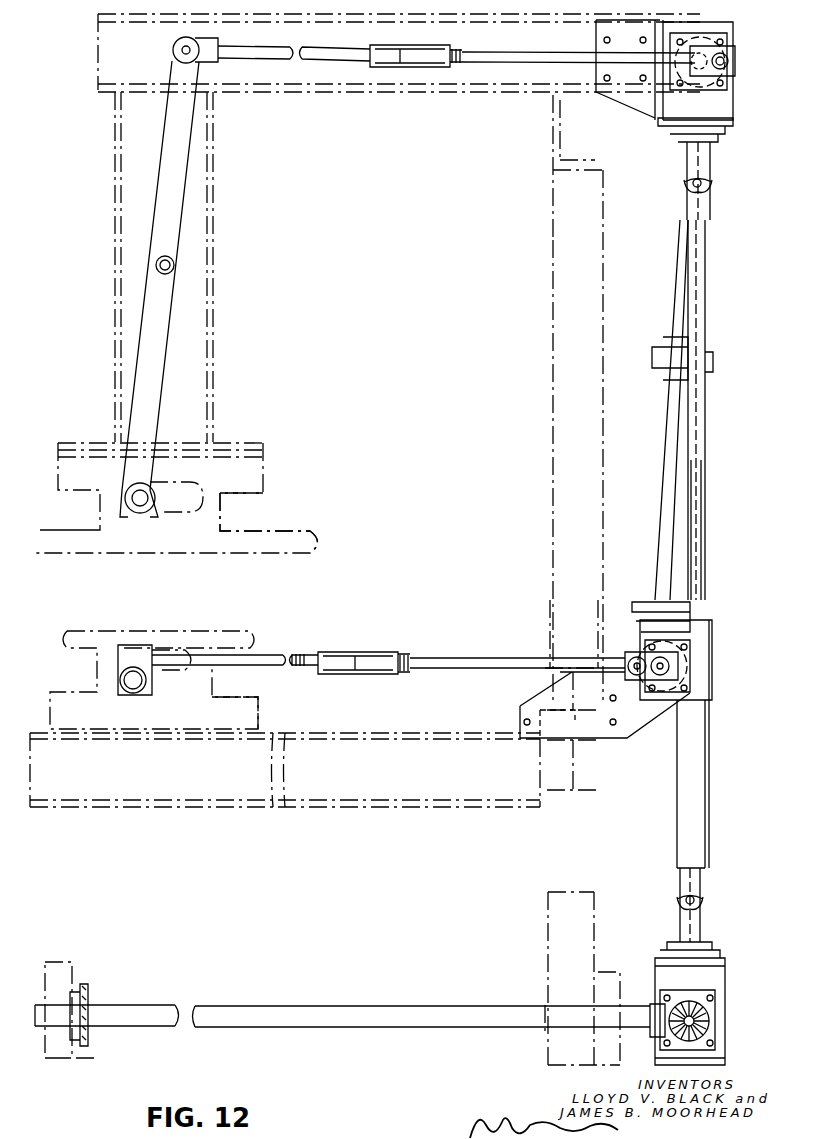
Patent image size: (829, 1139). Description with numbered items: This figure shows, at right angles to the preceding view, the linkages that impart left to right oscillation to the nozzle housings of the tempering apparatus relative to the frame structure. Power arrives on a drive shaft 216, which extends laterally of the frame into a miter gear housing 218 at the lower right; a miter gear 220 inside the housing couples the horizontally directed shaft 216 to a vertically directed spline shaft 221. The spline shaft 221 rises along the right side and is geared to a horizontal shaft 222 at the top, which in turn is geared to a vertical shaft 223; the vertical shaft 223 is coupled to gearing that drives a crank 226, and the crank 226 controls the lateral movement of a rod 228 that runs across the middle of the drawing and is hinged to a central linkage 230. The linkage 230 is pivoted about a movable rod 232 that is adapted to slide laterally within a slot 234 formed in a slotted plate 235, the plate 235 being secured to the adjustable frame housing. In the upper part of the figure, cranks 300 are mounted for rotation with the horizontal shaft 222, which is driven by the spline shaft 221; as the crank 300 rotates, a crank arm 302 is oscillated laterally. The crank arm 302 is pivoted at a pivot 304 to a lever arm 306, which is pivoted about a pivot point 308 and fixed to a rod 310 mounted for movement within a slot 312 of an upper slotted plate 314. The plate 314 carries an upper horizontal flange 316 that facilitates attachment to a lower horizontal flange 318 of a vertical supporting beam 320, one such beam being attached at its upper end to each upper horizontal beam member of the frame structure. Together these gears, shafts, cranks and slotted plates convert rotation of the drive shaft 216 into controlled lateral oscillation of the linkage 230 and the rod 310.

The drive shaft 216 is at (196, 1004).
The miter gear housing 218 is at (715, 978).
The miter gear 220 is at (706, 1016).
The spline shaft 221 is at (702, 446).
The horizontal shaft 222 is at (722, 82).
The vertical shaft 223 is at (676, 308).
The crank 226 is at (633, 655).
The rod 228 is at (296, 655).
The central linkage 230 is at (136, 652).
The movable rod 232 is at (134, 690).
The slot 234 is at (183, 690).
The slotted plate 235 is at (268, 716).
The crank 300 is at (702, 78).
The crank arm 302 is at (300, 60).
The pivot 304 is at (178, 55).
The lever arm 306 is at (170, 160).
The pivot point 308 is at (176, 267).
The rod 310 is at (140, 506).
The slot 312 is at (186, 512).
The upper slotted plate 314 is at (232, 516).
The upper horizontal flange 316 is at (262, 457).
The lower horizontal flange 318 is at (262, 443).
The vertical supporting beam 320 is at (198, 348).